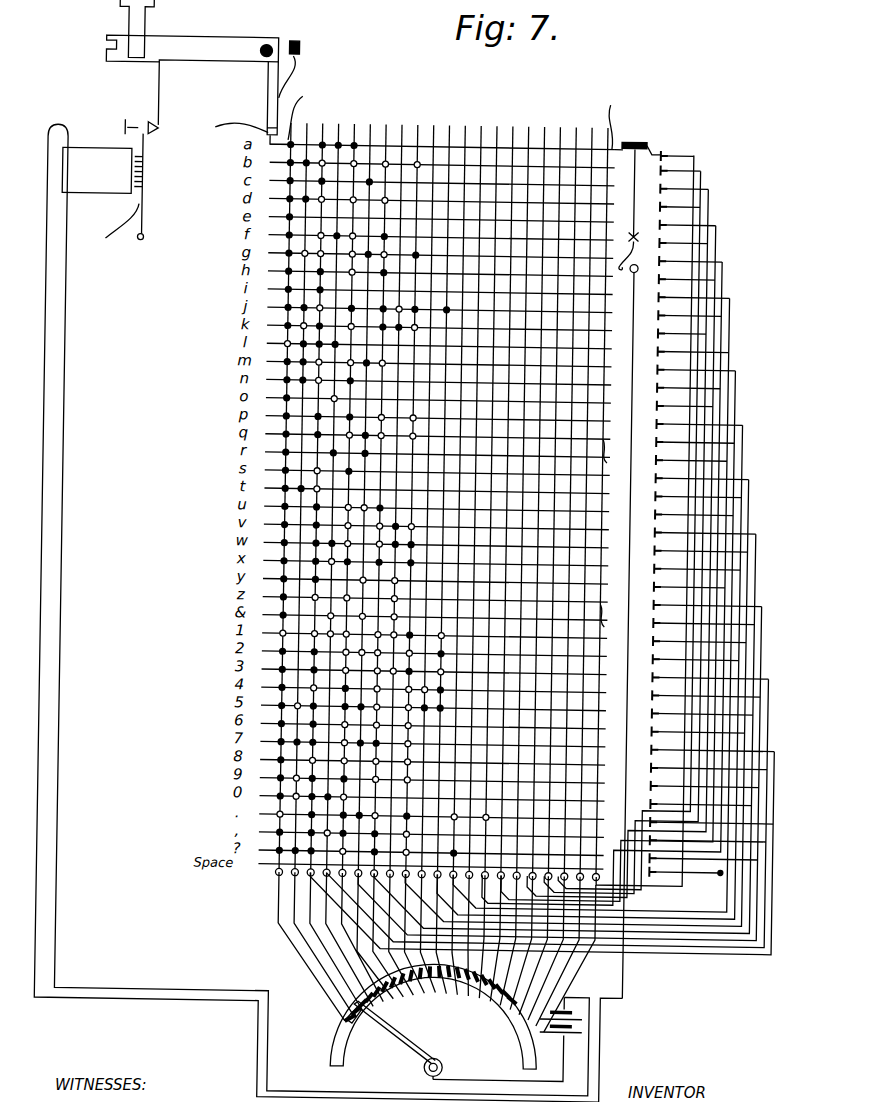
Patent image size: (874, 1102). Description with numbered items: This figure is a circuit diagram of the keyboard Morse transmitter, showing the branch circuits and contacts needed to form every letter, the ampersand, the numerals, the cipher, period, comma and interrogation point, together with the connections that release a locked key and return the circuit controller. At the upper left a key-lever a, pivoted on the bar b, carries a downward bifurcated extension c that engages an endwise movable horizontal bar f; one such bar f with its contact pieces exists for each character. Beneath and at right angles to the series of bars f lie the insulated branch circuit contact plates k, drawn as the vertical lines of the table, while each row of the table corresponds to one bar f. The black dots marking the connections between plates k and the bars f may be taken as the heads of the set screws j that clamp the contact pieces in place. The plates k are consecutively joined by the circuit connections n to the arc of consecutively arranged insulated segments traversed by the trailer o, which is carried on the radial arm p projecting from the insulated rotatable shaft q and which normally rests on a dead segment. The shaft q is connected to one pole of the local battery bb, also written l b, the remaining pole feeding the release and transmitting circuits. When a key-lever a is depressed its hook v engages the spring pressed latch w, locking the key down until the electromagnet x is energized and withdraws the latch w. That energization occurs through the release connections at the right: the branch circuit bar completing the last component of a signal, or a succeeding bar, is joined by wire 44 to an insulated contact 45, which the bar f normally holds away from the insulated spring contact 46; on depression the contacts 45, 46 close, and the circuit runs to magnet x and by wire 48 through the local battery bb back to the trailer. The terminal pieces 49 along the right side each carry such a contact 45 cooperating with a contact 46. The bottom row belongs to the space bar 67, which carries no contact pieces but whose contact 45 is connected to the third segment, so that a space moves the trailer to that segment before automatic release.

The wire 44 is at (695, 166).
The insulated contact 45 is at (652, 147).
The insulated spring contact 46 is at (634, 190).
The wire 48 is at (68, 328).
The terminal pieces 49 is at (656, 870).
The endwise movable bar 67 is at (280, 868).
The key-lever a is at (188, 42).
The bar b is at (268, 44).
The bifurcated extension c is at (265, 100).
The horizontal bar f is at (445, 349).
The set screw j is at (336, 130).
The branch circuit contact plates k is at (496, 128).
The local battery l is at (234, 127).
The circuit connections n is at (562, 966).
The trailer o is at (330, 1038).
The radial arm p is at (402, 1038).
The rotatable shaft q is at (440, 1063).
The hook v is at (160, 101).
The latch w is at (146, 192).
The electromagnet x is at (102, 170).
The local battery bb is at (585, 1032).